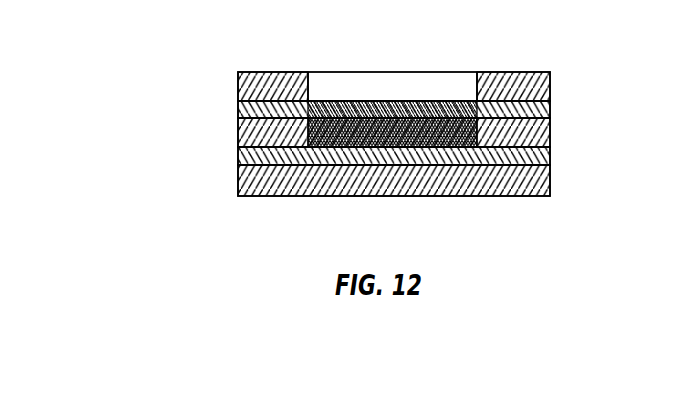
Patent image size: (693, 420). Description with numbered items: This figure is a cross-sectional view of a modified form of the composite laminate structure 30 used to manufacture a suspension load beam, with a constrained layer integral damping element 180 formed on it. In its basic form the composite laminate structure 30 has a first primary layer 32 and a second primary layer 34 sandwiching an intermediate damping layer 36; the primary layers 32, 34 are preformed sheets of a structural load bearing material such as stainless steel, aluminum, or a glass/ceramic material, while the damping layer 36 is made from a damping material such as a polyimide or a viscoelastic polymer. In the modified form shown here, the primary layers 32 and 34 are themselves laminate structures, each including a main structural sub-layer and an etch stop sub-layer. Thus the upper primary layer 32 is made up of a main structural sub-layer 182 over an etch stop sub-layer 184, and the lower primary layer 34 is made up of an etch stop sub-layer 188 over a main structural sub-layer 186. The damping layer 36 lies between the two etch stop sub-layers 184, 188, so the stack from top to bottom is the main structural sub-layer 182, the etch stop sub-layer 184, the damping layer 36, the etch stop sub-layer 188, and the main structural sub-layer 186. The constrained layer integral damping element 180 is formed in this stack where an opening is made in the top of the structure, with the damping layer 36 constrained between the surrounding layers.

The composite laminate structure 30 is at (368, 133).
The first primary layer 32 is at (414, 82).
The second primary layer 34 is at (414, 184).
The intermediate damping layer 36 is at (237, 138).
The constrained layer integral damping element 180 is at (392, 89).
The main structural sub-layer 182 is at (550, 80).
The etch stop sub-layer 184 is at (550, 107).
The main structural sub-layer 186 is at (550, 186).
The etch stop sub-layer 188 is at (550, 152).